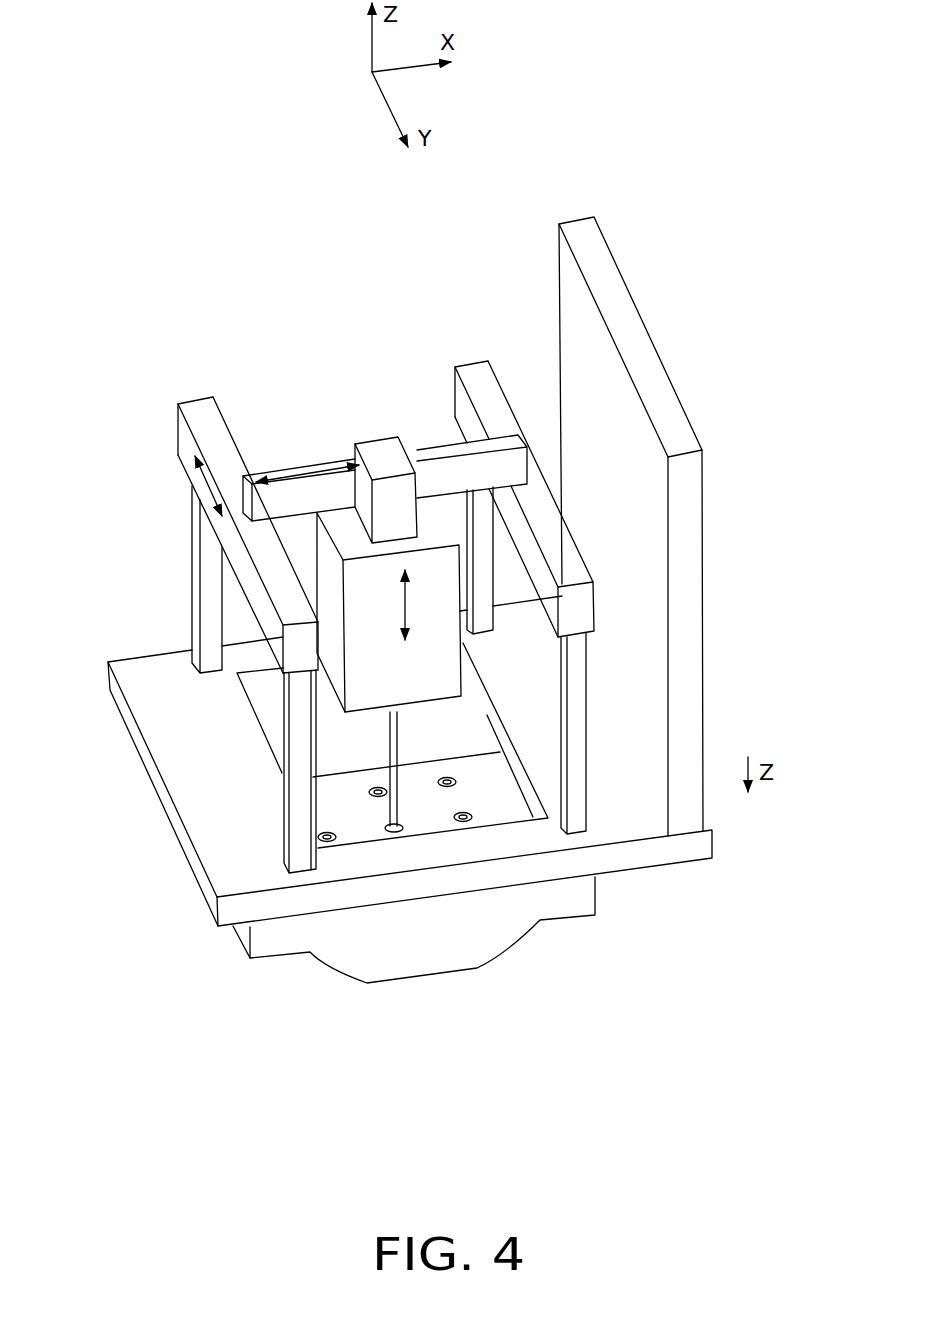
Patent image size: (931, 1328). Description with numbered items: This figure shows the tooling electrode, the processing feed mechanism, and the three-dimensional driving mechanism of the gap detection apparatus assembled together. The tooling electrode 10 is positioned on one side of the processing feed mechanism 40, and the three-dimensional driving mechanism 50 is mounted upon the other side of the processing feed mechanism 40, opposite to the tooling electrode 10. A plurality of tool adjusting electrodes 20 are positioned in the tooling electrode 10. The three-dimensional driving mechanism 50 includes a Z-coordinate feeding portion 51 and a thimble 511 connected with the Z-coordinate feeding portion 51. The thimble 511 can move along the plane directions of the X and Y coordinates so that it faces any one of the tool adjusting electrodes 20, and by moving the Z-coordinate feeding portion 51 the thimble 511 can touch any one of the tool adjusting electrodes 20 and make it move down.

The tooling electrode 10 is at (450, 962).
The tool adjusting electrodes 20 is at (457, 777).
The processing feed mechanism 40 is at (630, 332).
The three-dimensional driving mechanism 50 is at (202, 412).
The Z-coordinate feeding portion 51 is at (370, 680).
The thimble 511 is at (392, 750).